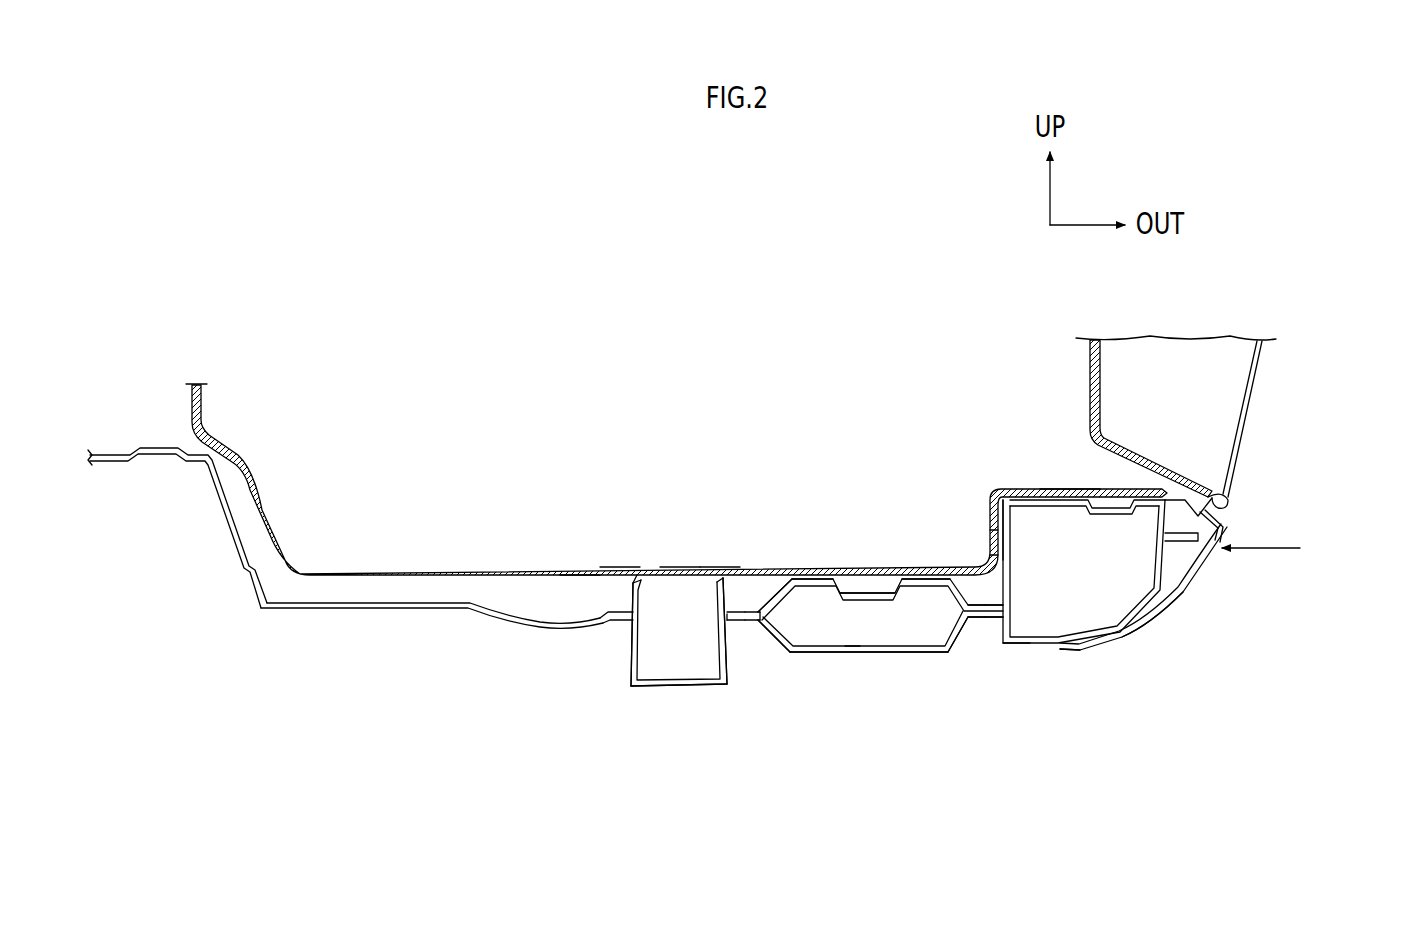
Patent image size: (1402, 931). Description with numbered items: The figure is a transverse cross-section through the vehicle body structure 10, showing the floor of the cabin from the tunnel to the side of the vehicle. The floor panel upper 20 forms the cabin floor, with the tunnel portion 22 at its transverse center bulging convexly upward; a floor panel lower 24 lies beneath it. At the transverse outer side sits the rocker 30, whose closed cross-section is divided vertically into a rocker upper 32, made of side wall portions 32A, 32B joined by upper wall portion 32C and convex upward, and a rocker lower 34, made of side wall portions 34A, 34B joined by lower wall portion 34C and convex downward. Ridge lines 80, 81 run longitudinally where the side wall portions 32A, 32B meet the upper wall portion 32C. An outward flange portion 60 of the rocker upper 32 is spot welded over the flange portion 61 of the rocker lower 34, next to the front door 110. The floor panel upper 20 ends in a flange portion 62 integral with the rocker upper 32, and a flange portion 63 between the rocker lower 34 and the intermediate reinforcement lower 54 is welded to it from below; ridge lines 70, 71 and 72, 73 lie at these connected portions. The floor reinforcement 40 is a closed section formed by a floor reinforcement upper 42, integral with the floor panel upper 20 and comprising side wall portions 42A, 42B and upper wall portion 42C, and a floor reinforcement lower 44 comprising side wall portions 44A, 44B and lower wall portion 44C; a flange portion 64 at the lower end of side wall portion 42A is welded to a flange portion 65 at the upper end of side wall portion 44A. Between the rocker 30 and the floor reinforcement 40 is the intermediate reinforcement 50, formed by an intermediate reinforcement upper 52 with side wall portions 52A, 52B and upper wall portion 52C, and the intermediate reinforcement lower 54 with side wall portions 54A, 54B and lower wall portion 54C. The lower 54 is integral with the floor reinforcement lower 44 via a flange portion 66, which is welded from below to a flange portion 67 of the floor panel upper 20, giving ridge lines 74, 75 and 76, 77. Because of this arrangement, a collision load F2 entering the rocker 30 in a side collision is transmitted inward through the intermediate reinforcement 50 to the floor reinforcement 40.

The vehicle body structure 10 is at (662, 262).
The floor panel upper 20 is at (423, 603).
The tunnel portion 22 is at (150, 447).
The floor panel lower 24 is at (852, 657).
The rocker 30 is at (1357, 510).
The rocker upper 32 is at (1200, 516).
The side wall portion 32A is at (997, 600).
The side wall portion 32B is at (1183, 497).
The upper wall portion 32C is at (1067, 487).
The rocker lower 34 is at (1163, 557).
The side wall portion 34A is at (1000, 650).
The side wall portion 34B is at (1175, 592).
The lower wall portion 34C is at (1080, 643).
The floor reinforcement 40 is at (598, 411).
The floor reinforcement upper 42 is at (660, 577).
The side wall portion 42A is at (612, 580).
The side wall portion 42B is at (727, 578).
The upper wall portion 42C is at (687, 577).
The floor reinforcement lower 44 is at (643, 578).
The side wall portion 44A is at (633, 660).
The side wall portion 44B is at (720, 670).
The lower wall portion 44C is at (680, 690).
The intermediate reinforcement 50 is at (793, 411).
The intermediate reinforcement upper 52 is at (837, 578).
The side wall portion 52A is at (777, 578).
The side wall portion 52B is at (950, 600).
The upper wall portion 52C is at (865, 578).
The intermediate reinforcement lower 54 is at (818, 578).
The side wall portion 54A is at (773, 640).
The side wall portion 54B is at (950, 620).
The lower wall portion 54C is at (907, 653).
The flange portion 60 is at (1225, 531).
The flange portion 61 is at (1193, 543).
The flange portion 62 is at (963, 600).
The flange portion 63 is at (980, 620).
The flange portion 64 is at (598, 578).
The flange portion 65 is at (603, 623).
The flange portion 66 is at (740, 640).
The flange portion 67 is at (743, 578).
The ridge line 70 is at (973, 600).
The ridge line 71 is at (957, 605).
The ridge line 72 is at (997, 640).
The ridge line 73 is at (963, 620).
The ridge line 74 is at (737, 580).
The ridge line 75 is at (757, 578).
The ridge line 76 is at (733, 640).
The ridge line 77 is at (757, 640).
The ridge line 80 is at (1007, 492).
The ridge line 81 is at (1180, 503).
The front door 110 is at (1258, 407).
The collision load F2 is at (1283, 549).